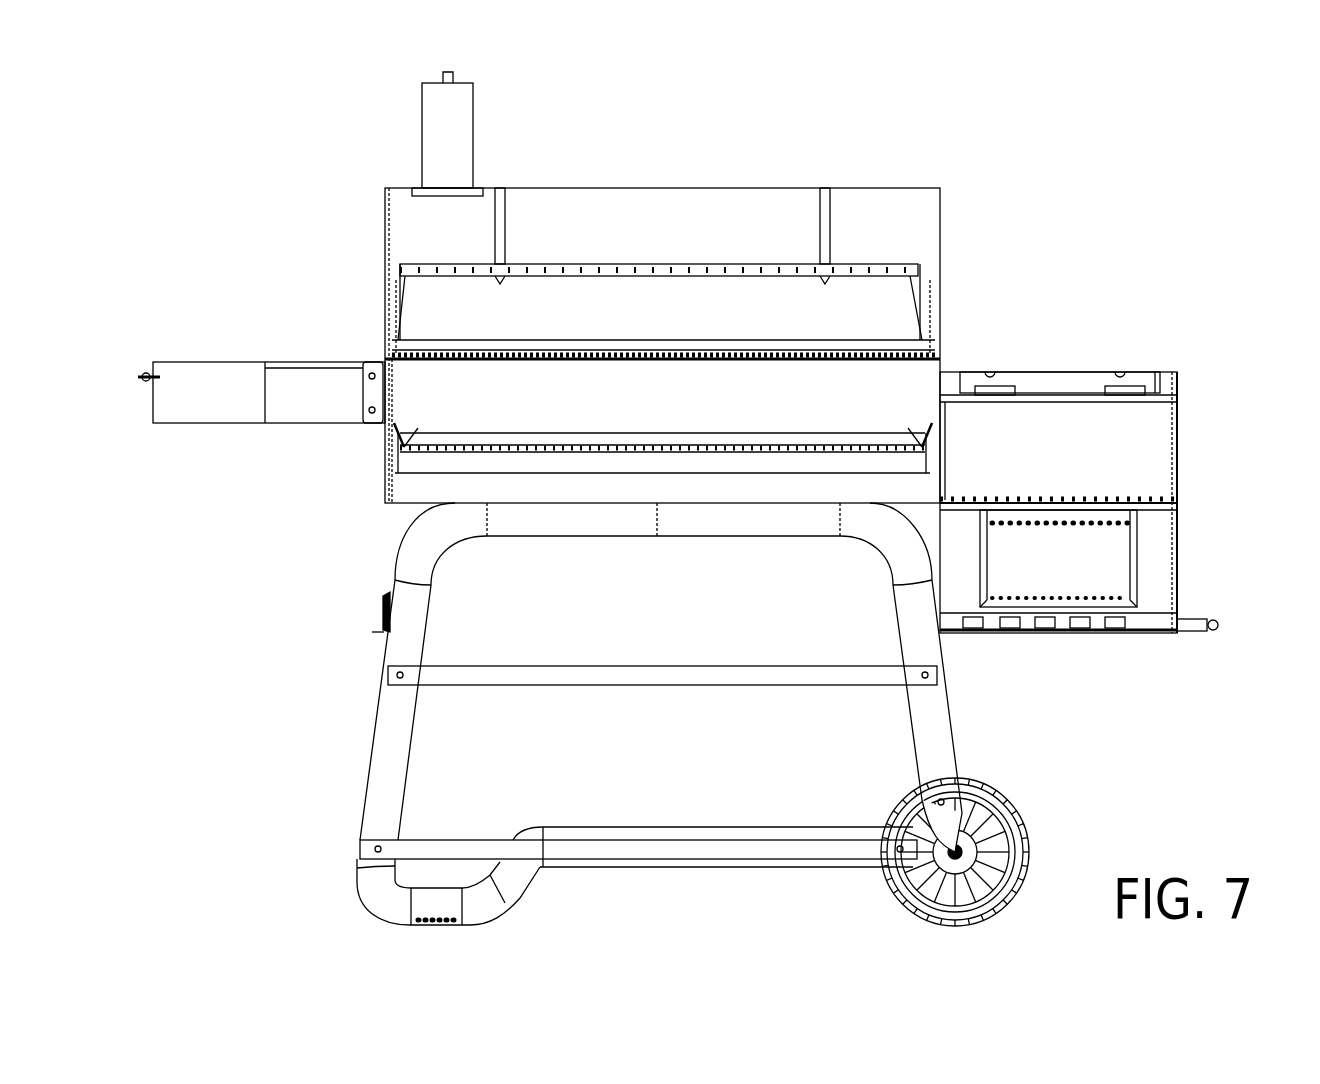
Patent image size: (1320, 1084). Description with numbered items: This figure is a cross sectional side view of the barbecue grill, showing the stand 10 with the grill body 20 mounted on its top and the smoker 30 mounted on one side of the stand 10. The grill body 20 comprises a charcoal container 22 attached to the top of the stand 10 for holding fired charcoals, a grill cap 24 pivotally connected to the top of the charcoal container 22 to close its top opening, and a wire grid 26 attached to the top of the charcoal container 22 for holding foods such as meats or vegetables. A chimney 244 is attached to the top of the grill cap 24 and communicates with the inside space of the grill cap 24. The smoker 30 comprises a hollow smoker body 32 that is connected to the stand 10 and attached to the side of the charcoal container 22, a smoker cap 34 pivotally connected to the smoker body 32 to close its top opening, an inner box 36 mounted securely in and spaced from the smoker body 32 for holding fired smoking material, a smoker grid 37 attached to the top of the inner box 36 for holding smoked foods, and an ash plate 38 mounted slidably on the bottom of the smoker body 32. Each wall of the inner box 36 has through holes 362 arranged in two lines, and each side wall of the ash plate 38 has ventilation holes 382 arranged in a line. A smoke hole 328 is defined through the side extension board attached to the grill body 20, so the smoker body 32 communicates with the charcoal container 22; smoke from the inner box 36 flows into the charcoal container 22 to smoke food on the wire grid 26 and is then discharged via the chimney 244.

The stand 10 is at (356, 722).
The grill body 20 is at (797, 166).
The charcoal container 22 is at (385, 430).
The grill cap 24 is at (663, 212).
The chimney 244 is at (455, 140).
The wire grid 26 is at (425, 264).
The smoker 30 is at (1133, 356).
The smoker body 32 is at (1177, 560).
The smoke hole 328 is at (944, 415).
The smoker cap 34 is at (1045, 386).
The inner box 36 is at (1130, 551).
The through holes 362 is at (1050, 601).
The smoker grid 37 is at (1085, 490).
The ash plate 38 is at (1157, 630).
The ventilation holes 382 is at (1078, 630).